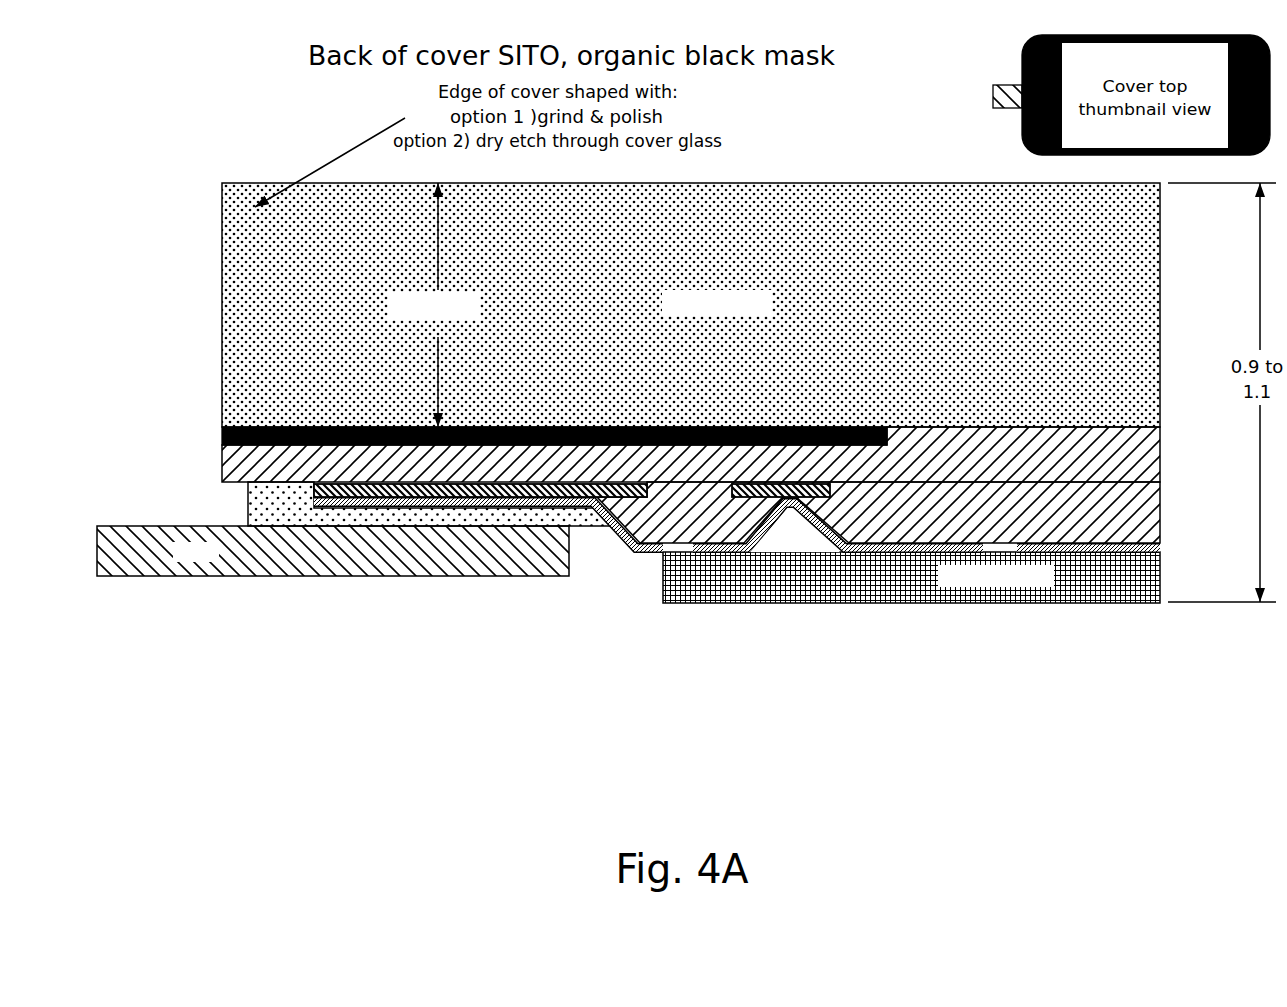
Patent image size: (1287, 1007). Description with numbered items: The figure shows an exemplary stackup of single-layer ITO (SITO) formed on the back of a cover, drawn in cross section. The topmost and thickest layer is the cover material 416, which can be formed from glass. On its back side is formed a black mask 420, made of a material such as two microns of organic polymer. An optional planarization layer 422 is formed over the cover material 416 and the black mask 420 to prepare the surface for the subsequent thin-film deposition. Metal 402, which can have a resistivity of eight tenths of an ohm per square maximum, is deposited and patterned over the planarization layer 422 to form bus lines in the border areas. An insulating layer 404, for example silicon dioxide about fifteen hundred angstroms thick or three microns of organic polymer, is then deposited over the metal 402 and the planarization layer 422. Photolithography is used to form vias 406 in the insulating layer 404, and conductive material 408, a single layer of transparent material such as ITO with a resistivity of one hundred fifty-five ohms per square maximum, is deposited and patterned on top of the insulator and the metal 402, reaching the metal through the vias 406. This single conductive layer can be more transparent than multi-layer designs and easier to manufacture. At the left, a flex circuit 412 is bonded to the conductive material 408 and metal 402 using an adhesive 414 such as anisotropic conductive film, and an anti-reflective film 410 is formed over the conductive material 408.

The metal 402 is at (577, 503).
The insulating layer 404 is at (690, 520).
The vias 406 is at (795, 533).
The conductive material 408 is at (877, 552).
The anti-reflective film 410 is at (750, 603).
The flex circuit 412 is at (468, 576).
The adhesive 414 is at (247, 500).
The cover material 416 is at (1149, 289).
The black mask 420 is at (408, 452).
The planarization layer 422 is at (485, 460).